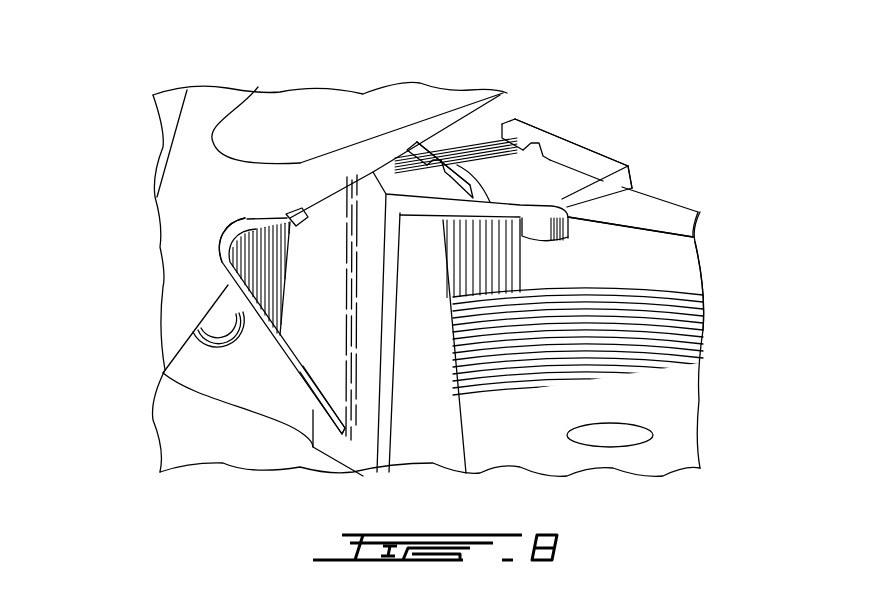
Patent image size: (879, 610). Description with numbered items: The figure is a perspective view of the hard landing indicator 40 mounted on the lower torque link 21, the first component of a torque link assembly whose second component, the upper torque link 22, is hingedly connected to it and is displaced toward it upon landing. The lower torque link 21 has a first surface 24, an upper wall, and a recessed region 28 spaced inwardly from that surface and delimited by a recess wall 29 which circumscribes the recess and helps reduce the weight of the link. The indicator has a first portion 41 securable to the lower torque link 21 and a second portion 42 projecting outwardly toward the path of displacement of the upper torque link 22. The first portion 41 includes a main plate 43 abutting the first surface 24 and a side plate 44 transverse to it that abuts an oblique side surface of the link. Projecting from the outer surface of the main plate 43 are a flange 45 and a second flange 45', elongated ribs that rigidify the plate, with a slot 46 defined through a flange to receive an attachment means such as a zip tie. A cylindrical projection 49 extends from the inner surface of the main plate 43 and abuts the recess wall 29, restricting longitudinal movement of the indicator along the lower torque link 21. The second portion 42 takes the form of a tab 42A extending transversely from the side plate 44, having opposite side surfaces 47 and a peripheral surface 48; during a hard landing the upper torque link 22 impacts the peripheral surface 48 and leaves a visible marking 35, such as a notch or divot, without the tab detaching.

The lower torque link 21 is at (500, 440).
The upper torque link 22 is at (200, 157).
The first surface 24 is at (418, 405).
The recessed region 28 is at (617, 327).
The recess wall 29 is at (647, 230).
The visible marking 35 is at (286, 218).
The hard landing indicator 40 is at (596, 105).
The first portion 41 is at (546, 193).
The second portion 42 is at (243, 263).
The tab 42A is at (264, 354).
The main plate 43 is at (607, 163).
The side plate 44 is at (372, 203).
The flange 45 is at (565, 108).
The second flange 45' is at (448, 117).
The slot 46 is at (552, 135).
The side surface of the tab 47 is at (315, 335).
The peripheral surface 48 is at (220, 236).
The projection 49 is at (547, 230).